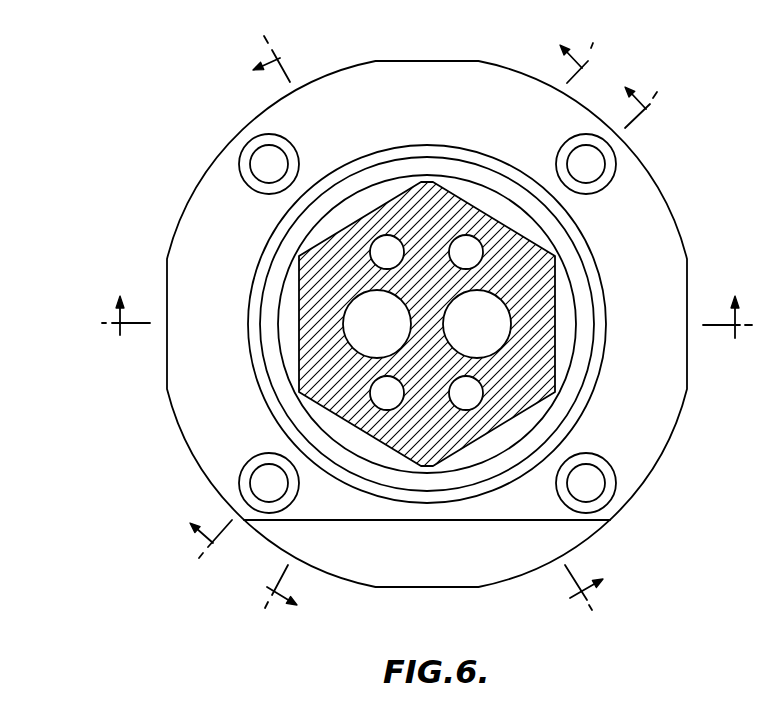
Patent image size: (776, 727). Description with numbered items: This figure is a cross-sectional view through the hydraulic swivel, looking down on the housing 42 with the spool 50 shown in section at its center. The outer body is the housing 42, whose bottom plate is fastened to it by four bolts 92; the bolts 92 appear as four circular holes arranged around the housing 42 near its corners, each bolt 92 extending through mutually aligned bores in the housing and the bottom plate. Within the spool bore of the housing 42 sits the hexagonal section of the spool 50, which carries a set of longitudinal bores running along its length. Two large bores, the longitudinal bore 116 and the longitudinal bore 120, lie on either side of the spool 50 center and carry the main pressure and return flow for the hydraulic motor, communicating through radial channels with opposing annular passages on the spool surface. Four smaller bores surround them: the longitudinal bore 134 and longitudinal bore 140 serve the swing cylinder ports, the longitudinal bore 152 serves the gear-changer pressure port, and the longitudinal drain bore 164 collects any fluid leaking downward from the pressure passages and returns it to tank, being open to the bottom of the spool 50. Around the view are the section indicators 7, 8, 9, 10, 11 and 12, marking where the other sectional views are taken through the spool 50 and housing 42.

The housing 42 is at (207, 378).
The spool 50 is at (430, 188).
The bolts 92 is at (268, 165).
The longitudinal bore 116 is at (365, 325).
The longitudinal bore 120 is at (489, 325).
The longitudinal bore 134 is at (387, 257).
The longitudinal bore 140 is at (466, 257).
The longitudinal bore 152 is at (471, 395).
The longitudinal drain bore 164 is at (383, 395).
The section line 7- 7 is at (412, 326).
The section line 8- 8 is at (266, 58).
The section line 9- 9 is at (586, 58).
The section line 10- 10 is at (263, 591).
The section line 11- 11 is at (580, 598).
The section line 12- 12 is at (437, 334).